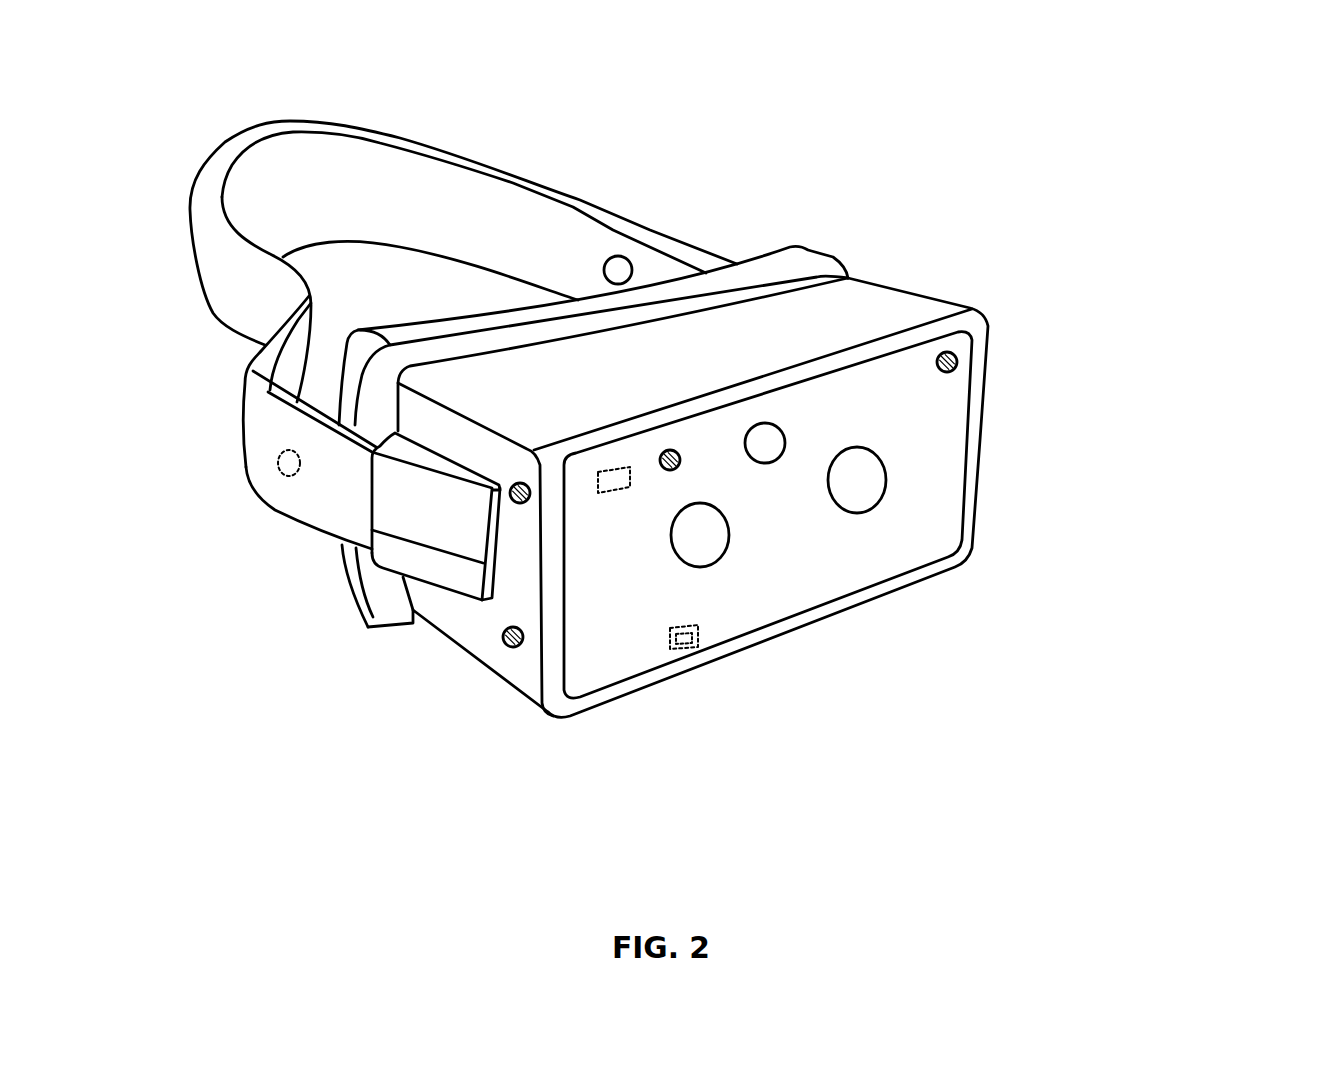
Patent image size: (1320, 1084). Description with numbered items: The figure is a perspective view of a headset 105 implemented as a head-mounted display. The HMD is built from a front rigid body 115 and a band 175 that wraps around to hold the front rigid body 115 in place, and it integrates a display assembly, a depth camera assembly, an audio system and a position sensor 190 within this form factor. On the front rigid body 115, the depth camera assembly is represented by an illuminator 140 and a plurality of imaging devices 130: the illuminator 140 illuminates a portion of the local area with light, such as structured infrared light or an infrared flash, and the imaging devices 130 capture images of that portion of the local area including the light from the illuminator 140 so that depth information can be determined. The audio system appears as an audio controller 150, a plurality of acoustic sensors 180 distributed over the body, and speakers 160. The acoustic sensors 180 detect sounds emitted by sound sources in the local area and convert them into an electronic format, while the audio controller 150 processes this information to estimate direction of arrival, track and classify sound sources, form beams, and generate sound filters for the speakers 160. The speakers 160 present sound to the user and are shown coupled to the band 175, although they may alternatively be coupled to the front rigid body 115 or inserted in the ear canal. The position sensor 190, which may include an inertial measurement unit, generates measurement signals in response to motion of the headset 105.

The headset 105 is at (275, 89).
The front rigid body 115 is at (983, 308).
The imaging device 130 is at (727, 555).
The illuminator 140 is at (777, 426).
The audio controller 150 is at (598, 495).
The speaker 160 is at (280, 476).
The band 175 is at (597, 206).
The acoustic sensor 180 is at (502, 640).
The position sensor 190 is at (698, 637).